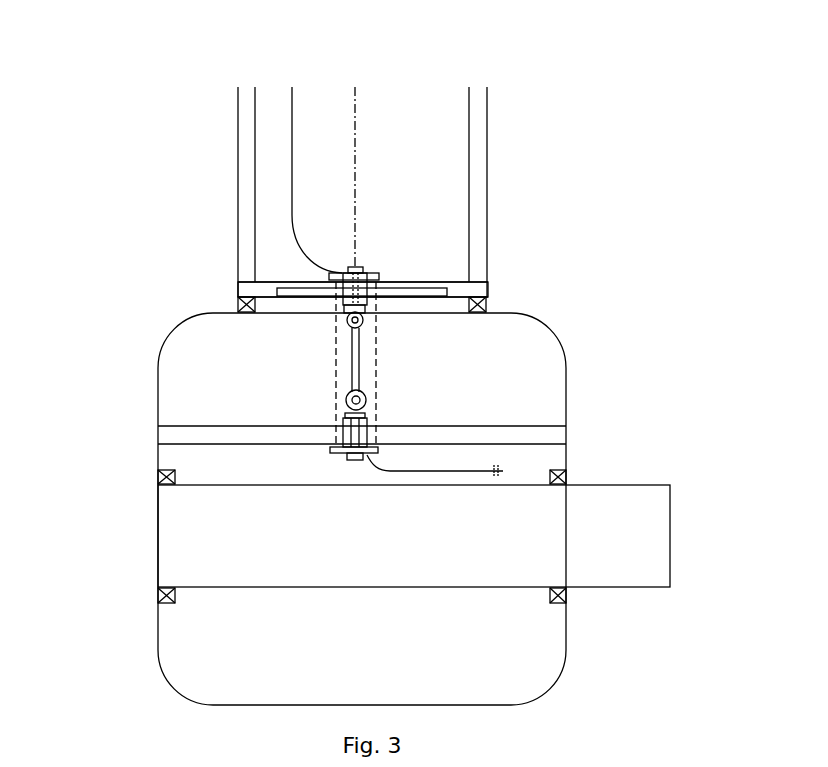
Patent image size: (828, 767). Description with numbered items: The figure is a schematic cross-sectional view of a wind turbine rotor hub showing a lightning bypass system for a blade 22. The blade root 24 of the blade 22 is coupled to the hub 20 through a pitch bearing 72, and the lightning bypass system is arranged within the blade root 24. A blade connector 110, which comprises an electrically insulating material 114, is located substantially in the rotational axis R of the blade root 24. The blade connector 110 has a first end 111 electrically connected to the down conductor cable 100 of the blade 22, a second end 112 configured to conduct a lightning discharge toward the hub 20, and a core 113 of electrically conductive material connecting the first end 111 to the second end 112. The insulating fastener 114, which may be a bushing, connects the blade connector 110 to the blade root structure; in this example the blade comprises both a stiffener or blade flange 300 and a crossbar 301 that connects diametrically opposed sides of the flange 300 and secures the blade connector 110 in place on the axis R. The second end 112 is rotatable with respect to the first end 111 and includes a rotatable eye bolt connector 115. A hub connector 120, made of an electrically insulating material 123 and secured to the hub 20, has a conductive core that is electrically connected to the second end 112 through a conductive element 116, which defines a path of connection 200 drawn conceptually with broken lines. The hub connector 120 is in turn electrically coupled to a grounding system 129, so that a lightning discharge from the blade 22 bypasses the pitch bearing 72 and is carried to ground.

The rotational axis R is at (360, 113).
The rotor blade 22 is at (478, 110).
The blade root 24 is at (245, 263).
The down conductor cable 100 is at (292, 103).
The crossbar 301 is at (290, 280).
The blade flange 300 is at (477, 290).
The second end 112 is at (385, 292).
The pitch bearing 72 is at (486, 307).
The blade connector 110 is at (358, 242).
The first end 111 is at (364, 268).
The electrically insulating fastener 114 is at (378, 280).
The core 113 is at (312, 329).
The rotatable eye bolt connector 115 is at (346, 324).
The conductive element 116 is at (362, 376).
The path of connection 200 is at (336, 370).
The hub 20 is at (158, 368).
The grounding system 129 is at (503, 471).
The electrically insulating material 123 is at (347, 433).
The hub connector 120 is at (316, 490).